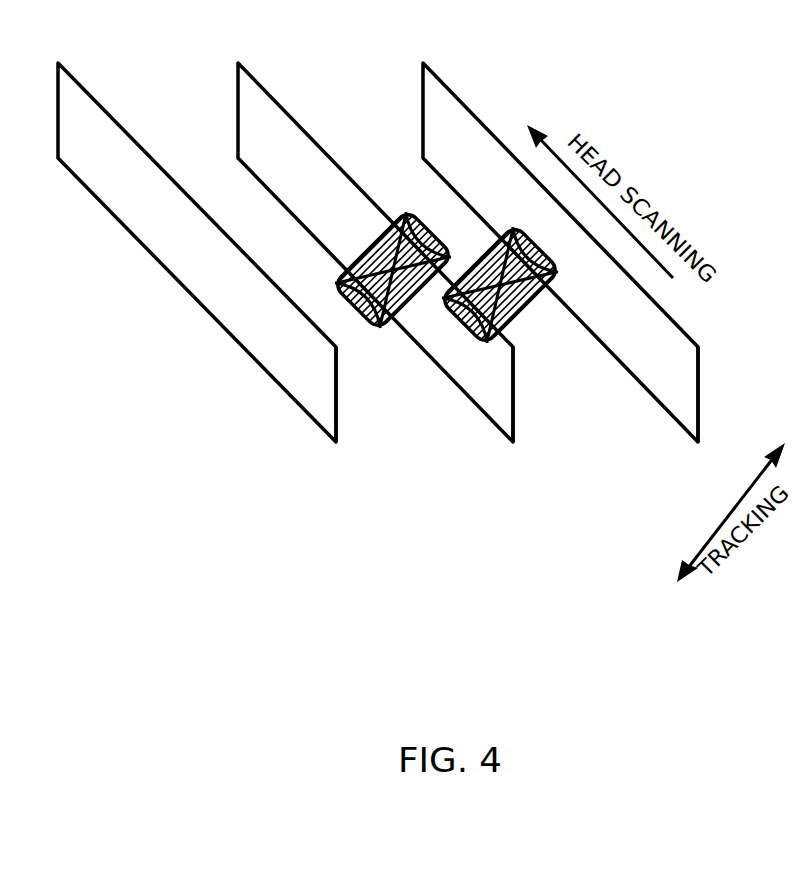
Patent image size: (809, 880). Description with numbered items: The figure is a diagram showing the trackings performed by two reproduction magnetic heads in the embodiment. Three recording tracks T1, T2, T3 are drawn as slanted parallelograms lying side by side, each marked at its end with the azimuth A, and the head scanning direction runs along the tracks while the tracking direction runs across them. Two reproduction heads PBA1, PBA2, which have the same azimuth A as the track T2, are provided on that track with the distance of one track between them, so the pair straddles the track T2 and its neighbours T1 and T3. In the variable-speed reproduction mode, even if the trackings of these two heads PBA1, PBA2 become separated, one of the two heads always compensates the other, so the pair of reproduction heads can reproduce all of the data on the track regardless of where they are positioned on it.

The track T1 is at (190, 232).
The track with the azimuth A T2 is at (367, 232).
The track T3 is at (552, 232).
The reproduction head PBA1 is at (393, 290).
The reproduction head PBA2 is at (507, 293).
The azimuth A is at (527, 408).